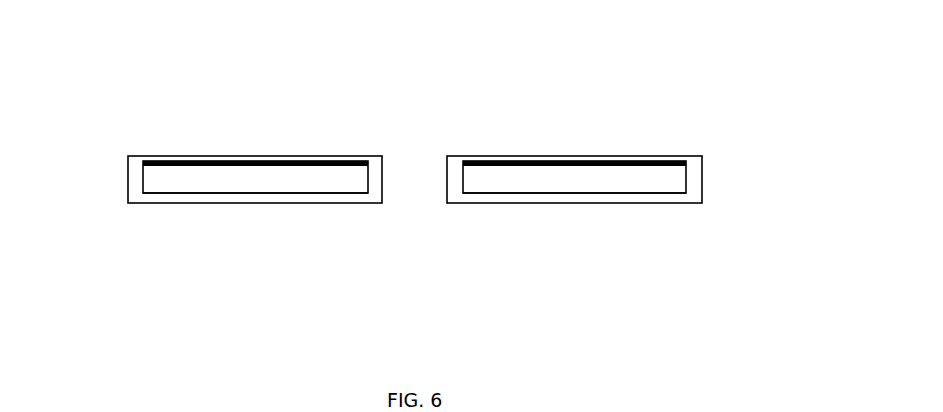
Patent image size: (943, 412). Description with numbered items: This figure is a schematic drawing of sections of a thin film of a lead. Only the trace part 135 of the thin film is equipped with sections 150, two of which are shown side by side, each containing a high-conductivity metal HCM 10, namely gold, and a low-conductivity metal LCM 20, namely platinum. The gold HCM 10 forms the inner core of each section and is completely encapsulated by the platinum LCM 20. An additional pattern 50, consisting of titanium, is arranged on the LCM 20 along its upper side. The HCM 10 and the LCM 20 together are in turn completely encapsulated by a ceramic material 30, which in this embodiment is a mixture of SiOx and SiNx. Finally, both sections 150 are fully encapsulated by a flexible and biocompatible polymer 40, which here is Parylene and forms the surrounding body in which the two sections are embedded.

The trace part 135 is at (436, 65).
The HCM (gold) 10 is at (175, 177).
The LCM (platinum) 20 is at (143, 173).
The ceramic material 30 is at (347, 197).
The flexible and biocompatible polymer 40 is at (120, 245).
The additional pattern 50 is at (282, 162).
The sections 150 is at (247, 217).